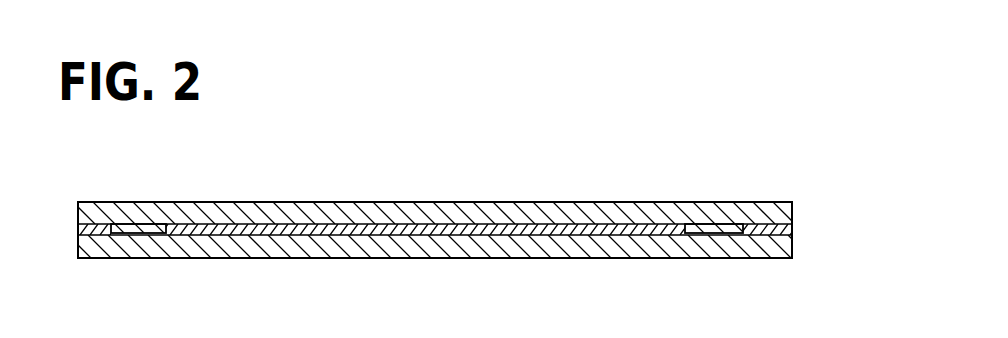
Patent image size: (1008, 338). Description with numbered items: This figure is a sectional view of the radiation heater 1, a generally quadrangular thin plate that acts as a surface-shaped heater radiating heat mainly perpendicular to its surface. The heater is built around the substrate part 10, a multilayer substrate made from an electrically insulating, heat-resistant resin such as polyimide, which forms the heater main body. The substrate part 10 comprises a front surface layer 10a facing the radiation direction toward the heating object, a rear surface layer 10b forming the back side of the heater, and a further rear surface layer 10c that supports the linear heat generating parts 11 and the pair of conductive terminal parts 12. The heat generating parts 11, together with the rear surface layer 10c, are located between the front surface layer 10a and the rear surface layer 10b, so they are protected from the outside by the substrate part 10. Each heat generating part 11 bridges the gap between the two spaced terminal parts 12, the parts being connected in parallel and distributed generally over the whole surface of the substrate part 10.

The radiation heater 1 is at (444, 216).
The substrate part 10 is at (431, 228).
The front surface layer 10a is at (680, 203).
The rear surface layer 10b is at (687, 247).
The rear surface layer 10c is at (94, 230).
The heat generating part 11 is at (487, 228).
The terminal part 12 is at (140, 227).